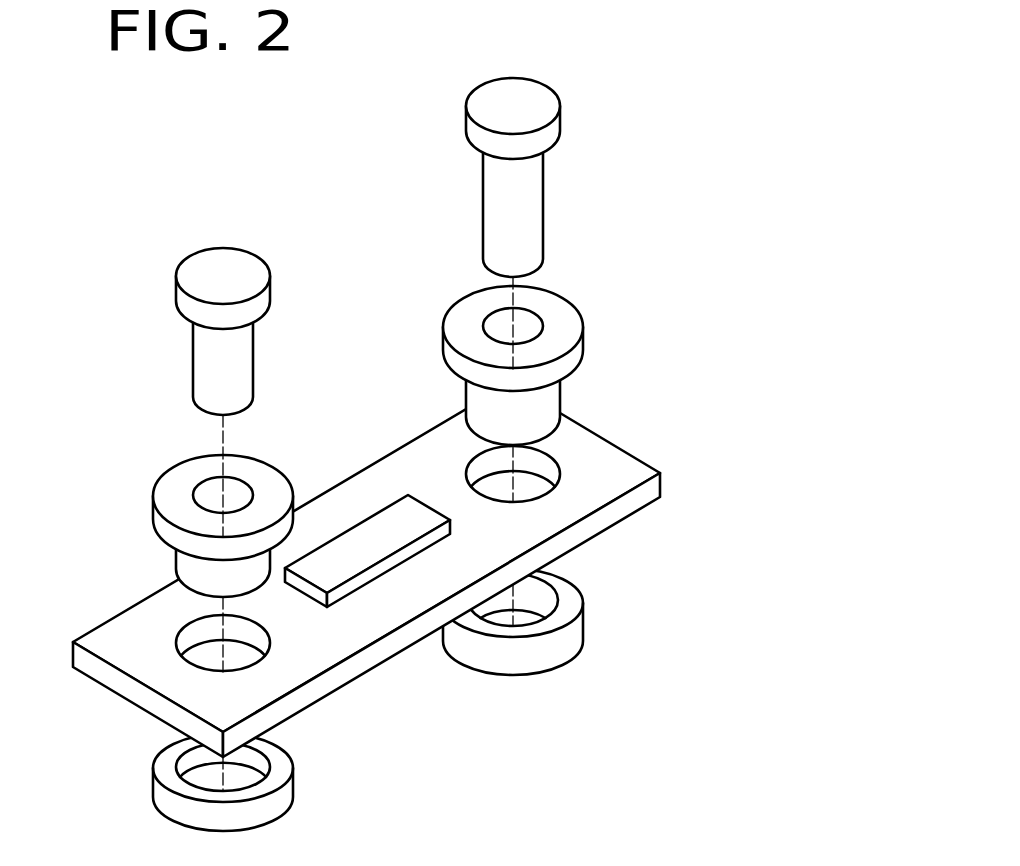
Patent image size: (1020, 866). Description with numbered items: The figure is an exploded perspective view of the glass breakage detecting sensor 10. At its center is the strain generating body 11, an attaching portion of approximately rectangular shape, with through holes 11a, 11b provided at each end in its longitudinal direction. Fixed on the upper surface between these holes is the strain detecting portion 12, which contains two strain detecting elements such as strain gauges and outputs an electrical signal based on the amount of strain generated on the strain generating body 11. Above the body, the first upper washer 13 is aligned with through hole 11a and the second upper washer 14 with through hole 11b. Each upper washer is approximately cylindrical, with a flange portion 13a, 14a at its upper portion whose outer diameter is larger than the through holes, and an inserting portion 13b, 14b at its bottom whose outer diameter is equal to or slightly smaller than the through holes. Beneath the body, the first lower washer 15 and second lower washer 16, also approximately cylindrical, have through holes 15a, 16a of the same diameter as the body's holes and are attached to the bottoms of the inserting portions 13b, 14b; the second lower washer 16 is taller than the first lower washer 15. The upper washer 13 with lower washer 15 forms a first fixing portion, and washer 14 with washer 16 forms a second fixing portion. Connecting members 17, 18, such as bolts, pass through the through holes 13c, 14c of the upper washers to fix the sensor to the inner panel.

The glass breakage detecting sensor 10 is at (685, 382).
The strain generating body 11 is at (640, 465).
The through hole 11a is at (252, 634).
The through hole 11b is at (548, 468).
The strain detecting portion 12 is at (375, 545).
The first upper washer 13 is at (269, 459).
The flange portion 13a is at (158, 502).
The inserting portion 13b is at (185, 577).
The through hole 13c is at (210, 495).
The second upper washer 14 is at (566, 294).
The flange portion 14a is at (572, 335).
The inserting portion 14b is at (470, 398).
The through hole 14c is at (492, 327).
The first lower washer 15 is at (285, 790).
The through hole 15a is at (187, 760).
The second lower washer 16 is at (567, 640).
The through hole 16a is at (547, 596).
The connecting member 17 is at (203, 356).
The connecting member 18 is at (527, 180).